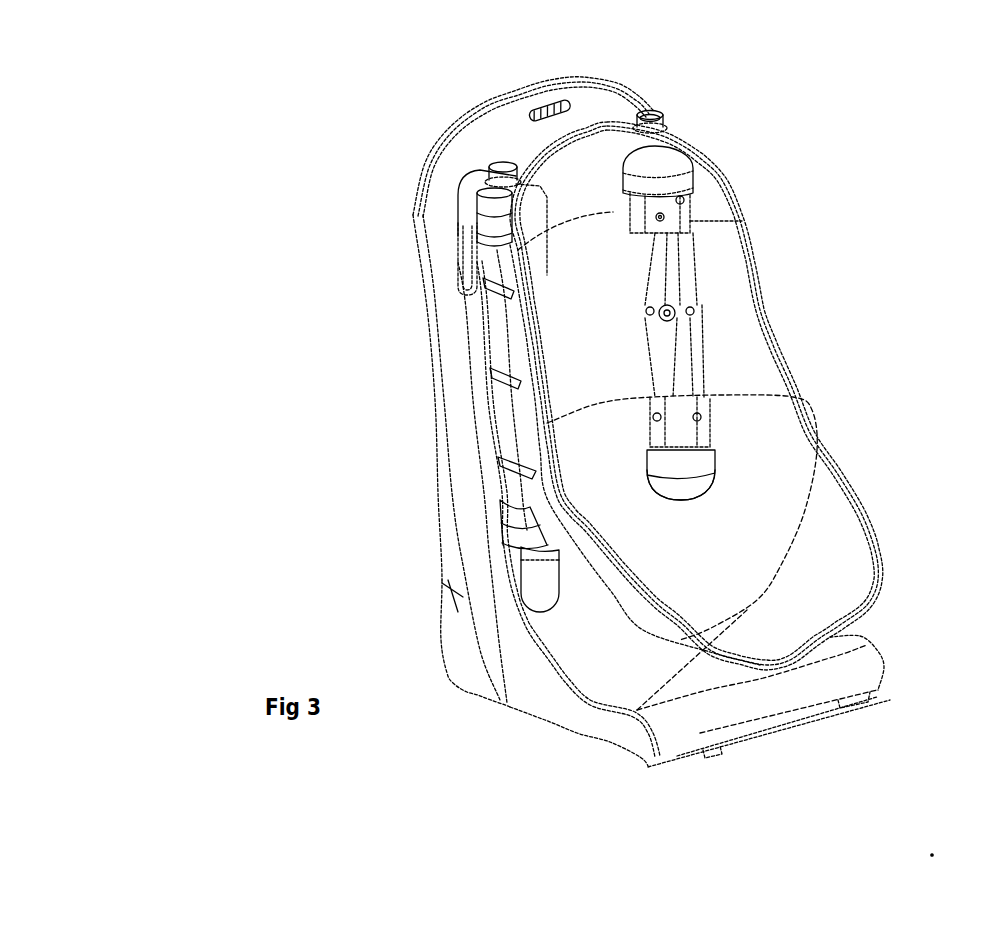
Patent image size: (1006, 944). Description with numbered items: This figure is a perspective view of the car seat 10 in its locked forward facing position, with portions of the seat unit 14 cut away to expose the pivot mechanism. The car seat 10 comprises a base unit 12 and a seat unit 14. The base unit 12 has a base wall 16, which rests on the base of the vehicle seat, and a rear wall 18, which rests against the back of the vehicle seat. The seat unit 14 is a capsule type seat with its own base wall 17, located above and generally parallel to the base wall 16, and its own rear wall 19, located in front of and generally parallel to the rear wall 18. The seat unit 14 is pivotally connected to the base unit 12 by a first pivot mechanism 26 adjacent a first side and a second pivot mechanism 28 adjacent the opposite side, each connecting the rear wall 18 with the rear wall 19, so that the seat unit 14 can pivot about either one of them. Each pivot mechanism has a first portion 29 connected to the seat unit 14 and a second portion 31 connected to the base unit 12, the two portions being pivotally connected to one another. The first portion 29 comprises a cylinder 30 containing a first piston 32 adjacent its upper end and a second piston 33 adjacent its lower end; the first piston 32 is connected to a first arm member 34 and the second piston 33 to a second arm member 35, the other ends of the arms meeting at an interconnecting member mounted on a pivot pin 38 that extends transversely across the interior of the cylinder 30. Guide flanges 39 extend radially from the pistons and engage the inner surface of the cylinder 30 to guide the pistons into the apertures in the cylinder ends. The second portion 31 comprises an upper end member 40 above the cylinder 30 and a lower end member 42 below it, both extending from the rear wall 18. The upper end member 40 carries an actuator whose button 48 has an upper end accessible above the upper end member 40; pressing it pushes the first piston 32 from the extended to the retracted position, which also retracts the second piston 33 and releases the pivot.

The car seat 10 is at (273, 194).
The base unit 12 is at (480, 690).
The seat unit 14 is at (838, 535).
The base wall 16 is at (600, 737).
The base wall 17 is at (803, 615).
The rear wall 18 is at (435, 527).
The rear wall 19 is at (593, 167).
The first pivot mechanism 26 is at (482, 150).
The second pivot mechanism 28 is at (652, 112).
The first portion 29 is at (500, 413).
The cylinder 30 is at (497, 442).
The second portion 31 is at (487, 213).
The first piston 32 is at (645, 212).
The second piston 33 is at (667, 435).
The first arm member 34 is at (657, 267).
The second arm member 35 is at (682, 375).
The pivot pin 38 is at (683, 307).
The guide flanges 39 is at (688, 200).
The upper end member 40 is at (483, 202).
The lower end member 42 is at (513, 535).
The button 48 is at (505, 160).